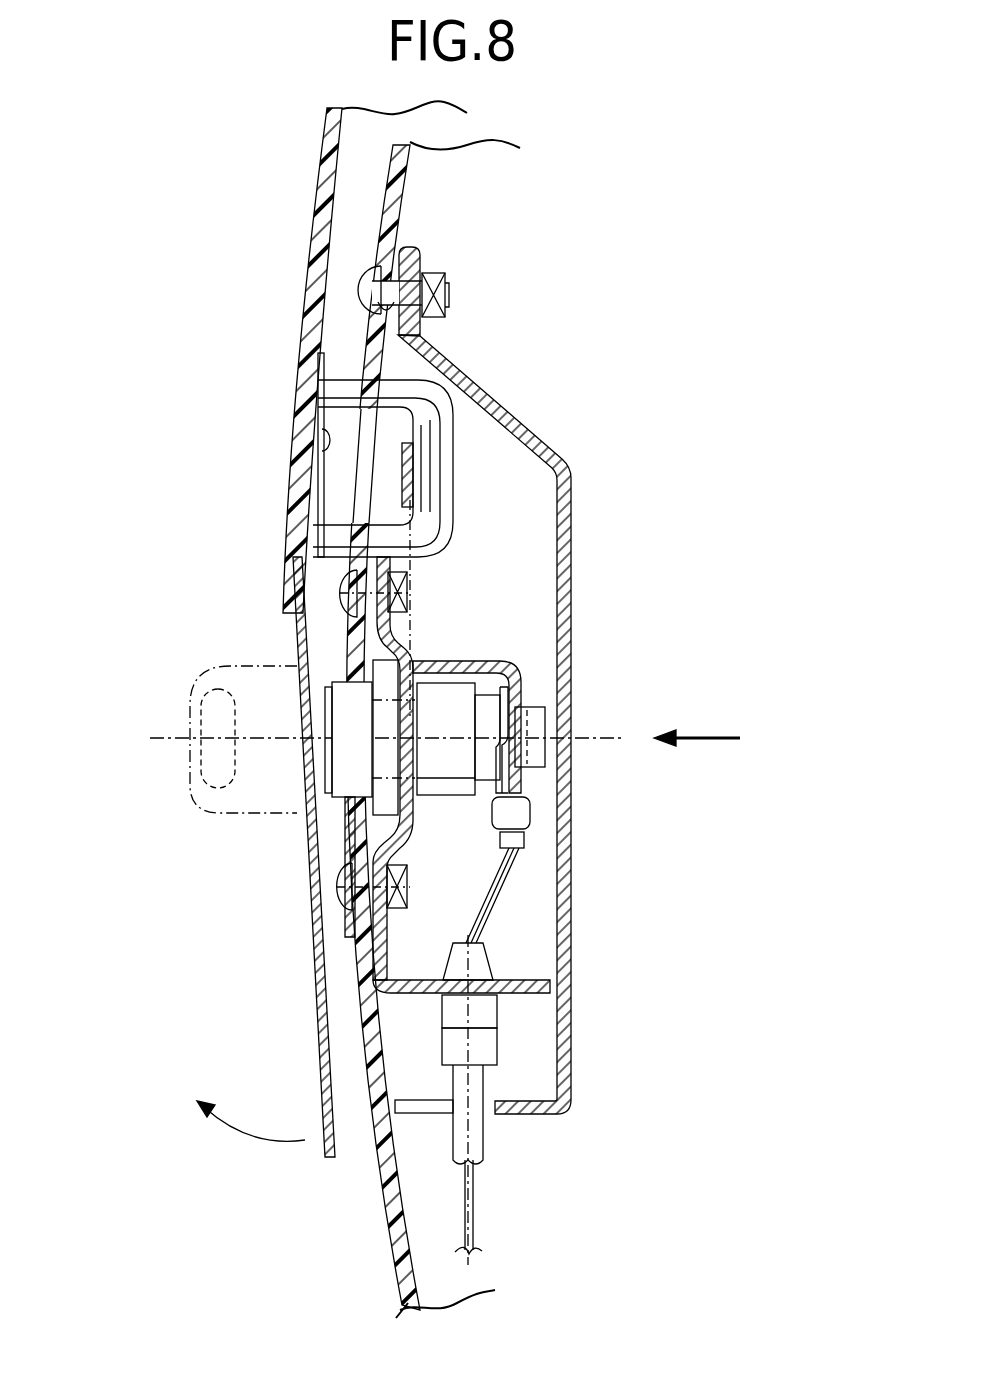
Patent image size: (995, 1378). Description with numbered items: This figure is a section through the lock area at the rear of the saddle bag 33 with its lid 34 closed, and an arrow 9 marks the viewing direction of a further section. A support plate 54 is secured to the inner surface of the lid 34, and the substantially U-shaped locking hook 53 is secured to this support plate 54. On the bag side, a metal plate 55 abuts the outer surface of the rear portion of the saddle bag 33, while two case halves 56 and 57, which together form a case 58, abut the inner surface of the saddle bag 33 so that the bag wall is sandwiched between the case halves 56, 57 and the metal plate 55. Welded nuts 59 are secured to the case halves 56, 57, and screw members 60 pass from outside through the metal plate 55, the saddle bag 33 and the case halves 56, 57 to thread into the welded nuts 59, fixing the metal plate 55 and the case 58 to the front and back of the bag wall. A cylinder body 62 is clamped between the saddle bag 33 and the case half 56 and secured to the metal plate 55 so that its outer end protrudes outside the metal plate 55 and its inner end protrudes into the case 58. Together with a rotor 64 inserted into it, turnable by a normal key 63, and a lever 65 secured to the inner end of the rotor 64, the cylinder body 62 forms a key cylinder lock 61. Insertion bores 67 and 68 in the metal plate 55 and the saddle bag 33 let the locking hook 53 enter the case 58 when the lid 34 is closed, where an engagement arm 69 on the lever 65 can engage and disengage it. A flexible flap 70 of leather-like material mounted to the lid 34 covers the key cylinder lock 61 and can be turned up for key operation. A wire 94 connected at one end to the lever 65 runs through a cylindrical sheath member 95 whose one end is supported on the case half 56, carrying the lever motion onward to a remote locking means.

The section view arrow 9 is at (725, 750).
The saddle bag 33 is at (390, 1243).
The lid 34 is at (313, 243).
The locking hook 53 is at (438, 449).
The support plate 54 is at (332, 452).
The metal plate 55 is at (356, 845).
The case half 56 is at (412, 797).
The case half 57 is at (565, 808).
The case 58 is at (582, 938).
The welded nut 59 is at (400, 575).
The screw member 60 is at (366, 286).
The key cylinder lock 61 is at (458, 675).
The cylinder body 62 is at (342, 790).
The key 63 is at (192, 768).
The rotor 64 is at (490, 707).
The lever 65 is at (532, 686).
The insertion bore 67 is at (381, 308).
The insertion bore 68 is at (418, 331).
The engagement arm 69 is at (413, 493).
The flap 70 is at (317, 1003).
The wire 94 is at (476, 1202).
The cylindrical sheath member 95 is at (476, 1140).